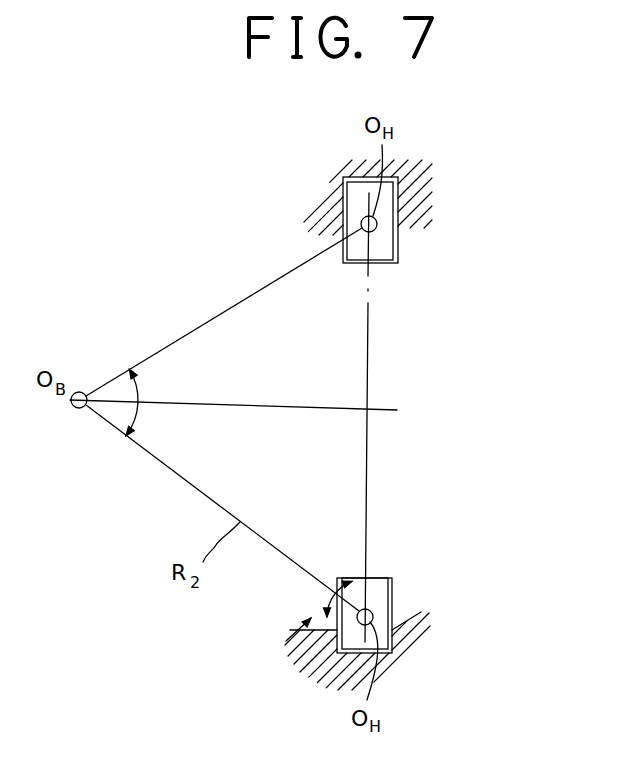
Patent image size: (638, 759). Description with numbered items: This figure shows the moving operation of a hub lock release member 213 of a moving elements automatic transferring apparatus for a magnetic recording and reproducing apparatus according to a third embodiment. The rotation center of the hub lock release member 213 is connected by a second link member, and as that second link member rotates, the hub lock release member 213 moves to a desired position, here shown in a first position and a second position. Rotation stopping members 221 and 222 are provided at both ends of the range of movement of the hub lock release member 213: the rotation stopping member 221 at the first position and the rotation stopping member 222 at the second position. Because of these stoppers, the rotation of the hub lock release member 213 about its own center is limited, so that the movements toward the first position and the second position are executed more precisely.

The hub lock release member 213 is at (352, 250).
The rotation stopping member 221 is at (413, 618).
The rotation stopping member 222 is at (404, 220).